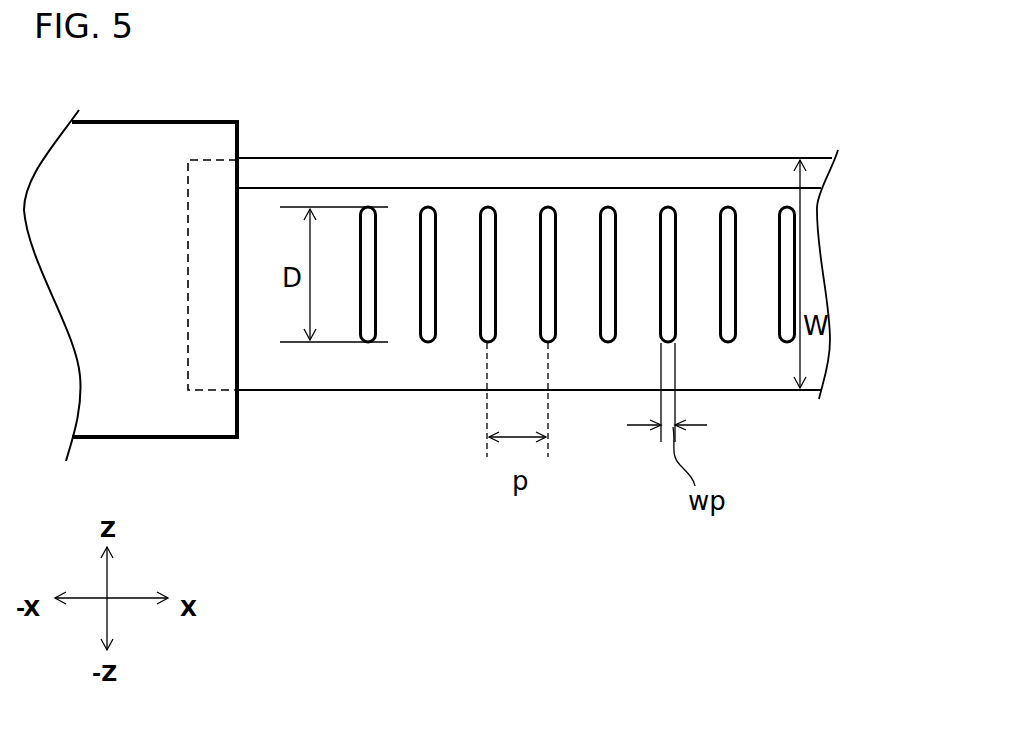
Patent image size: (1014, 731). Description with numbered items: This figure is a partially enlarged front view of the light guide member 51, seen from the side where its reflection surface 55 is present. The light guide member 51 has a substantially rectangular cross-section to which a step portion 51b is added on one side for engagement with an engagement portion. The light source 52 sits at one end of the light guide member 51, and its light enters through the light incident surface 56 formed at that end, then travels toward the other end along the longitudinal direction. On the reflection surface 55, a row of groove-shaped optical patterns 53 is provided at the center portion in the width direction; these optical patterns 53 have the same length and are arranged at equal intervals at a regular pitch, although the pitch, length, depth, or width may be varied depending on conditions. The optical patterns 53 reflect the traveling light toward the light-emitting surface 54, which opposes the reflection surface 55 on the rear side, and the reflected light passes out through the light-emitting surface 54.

The light guide member 51 is at (464, 150).
The step portion 51b is at (510, 183).
The light source 52 is at (239, 143).
The optical patterns 53 is at (548, 343).
The light-emitting surface 54 is at (428, 360).
The reflection surface 55 is at (398, 378).
The light incident surface 56 is at (188, 278).